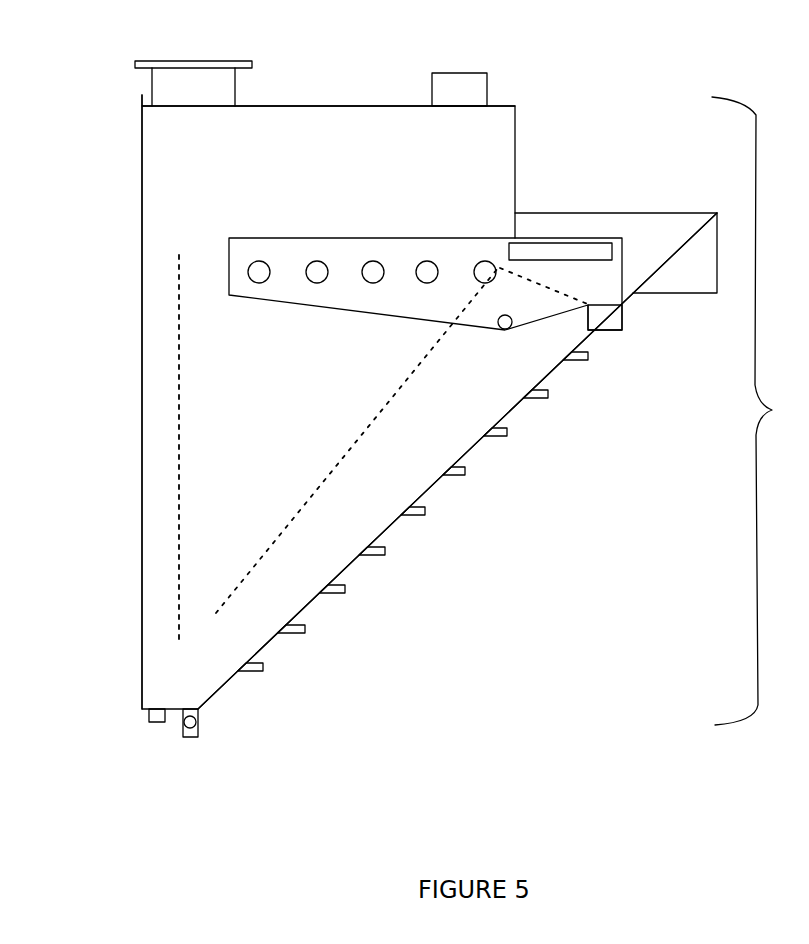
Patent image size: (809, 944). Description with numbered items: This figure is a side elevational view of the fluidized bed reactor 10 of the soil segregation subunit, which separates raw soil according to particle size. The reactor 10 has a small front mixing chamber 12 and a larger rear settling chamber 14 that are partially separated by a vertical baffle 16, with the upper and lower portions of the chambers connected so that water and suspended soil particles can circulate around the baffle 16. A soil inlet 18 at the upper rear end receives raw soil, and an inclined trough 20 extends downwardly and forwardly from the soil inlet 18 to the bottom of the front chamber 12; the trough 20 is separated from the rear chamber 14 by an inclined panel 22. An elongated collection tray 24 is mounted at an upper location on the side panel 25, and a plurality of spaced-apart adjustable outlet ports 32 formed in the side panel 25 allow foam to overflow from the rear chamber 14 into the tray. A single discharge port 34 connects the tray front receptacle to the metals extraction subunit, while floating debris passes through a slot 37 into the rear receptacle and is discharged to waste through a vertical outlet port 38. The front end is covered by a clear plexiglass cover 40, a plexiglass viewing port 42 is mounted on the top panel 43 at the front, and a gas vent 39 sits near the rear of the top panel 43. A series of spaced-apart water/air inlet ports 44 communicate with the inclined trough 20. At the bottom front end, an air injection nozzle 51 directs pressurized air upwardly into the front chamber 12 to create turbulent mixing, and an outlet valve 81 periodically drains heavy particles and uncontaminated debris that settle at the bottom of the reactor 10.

The fluidized bed reactor 10 is at (760, 411).
The front mixing chamber 12 is at (152, 482).
The rear settling chamber 14 is at (260, 426).
The vertical baffle 16 is at (178, 385).
The soil inlet 18 is at (584, 206).
The inclined trough 20 is at (430, 438).
The inclined panel 22 is at (397, 402).
The elongated collection tray 24 is at (402, 255).
The side panel 25 is at (220, 166).
The adjustable outlet ports 32 is at (373, 270).
The discharge port 34 is at (505, 329).
The slot 37 is at (587, 247).
The vertical outlet port 38 is at (612, 325).
The gas vent 39 is at (468, 73).
The clear plexiglass cover 40 is at (142, 377).
The plexiglass viewing port 42 is at (181, 60).
The top panel 43 is at (305, 105).
The water/air inlet ports 44 is at (588, 357).
The air injection nozzle 51 is at (162, 724).
The outlet valve 81 is at (195, 737).